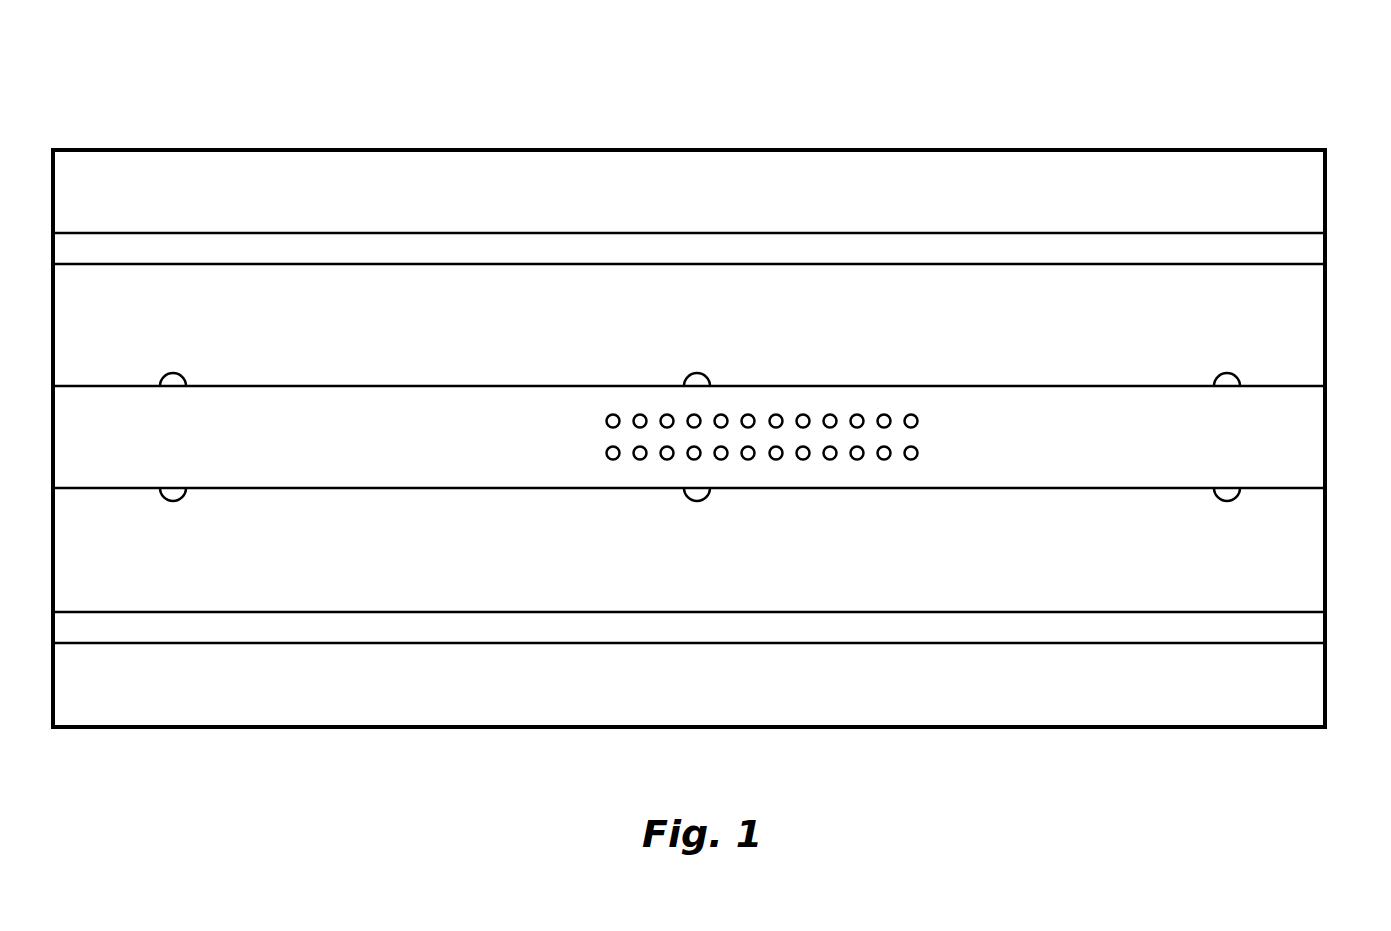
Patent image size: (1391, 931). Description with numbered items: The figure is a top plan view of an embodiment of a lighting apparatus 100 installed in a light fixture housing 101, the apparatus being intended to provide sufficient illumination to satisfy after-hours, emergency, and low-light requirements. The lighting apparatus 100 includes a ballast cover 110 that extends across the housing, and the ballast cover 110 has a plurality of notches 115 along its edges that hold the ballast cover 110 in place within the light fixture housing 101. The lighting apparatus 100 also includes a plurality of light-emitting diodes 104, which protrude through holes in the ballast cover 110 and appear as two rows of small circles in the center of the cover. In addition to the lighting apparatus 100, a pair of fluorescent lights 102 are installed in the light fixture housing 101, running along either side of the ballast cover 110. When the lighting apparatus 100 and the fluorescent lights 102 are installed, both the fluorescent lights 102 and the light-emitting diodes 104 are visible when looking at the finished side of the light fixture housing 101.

The lighting apparatus 100 is at (1297, 432).
The light fixture housing 101 is at (923, 137).
The fluorescent lights 102 is at (420, 246).
The light-emitting diodes 104 is at (665, 414).
The ballast cover 110 is at (1102, 415).
The notches 115 is at (698, 373).